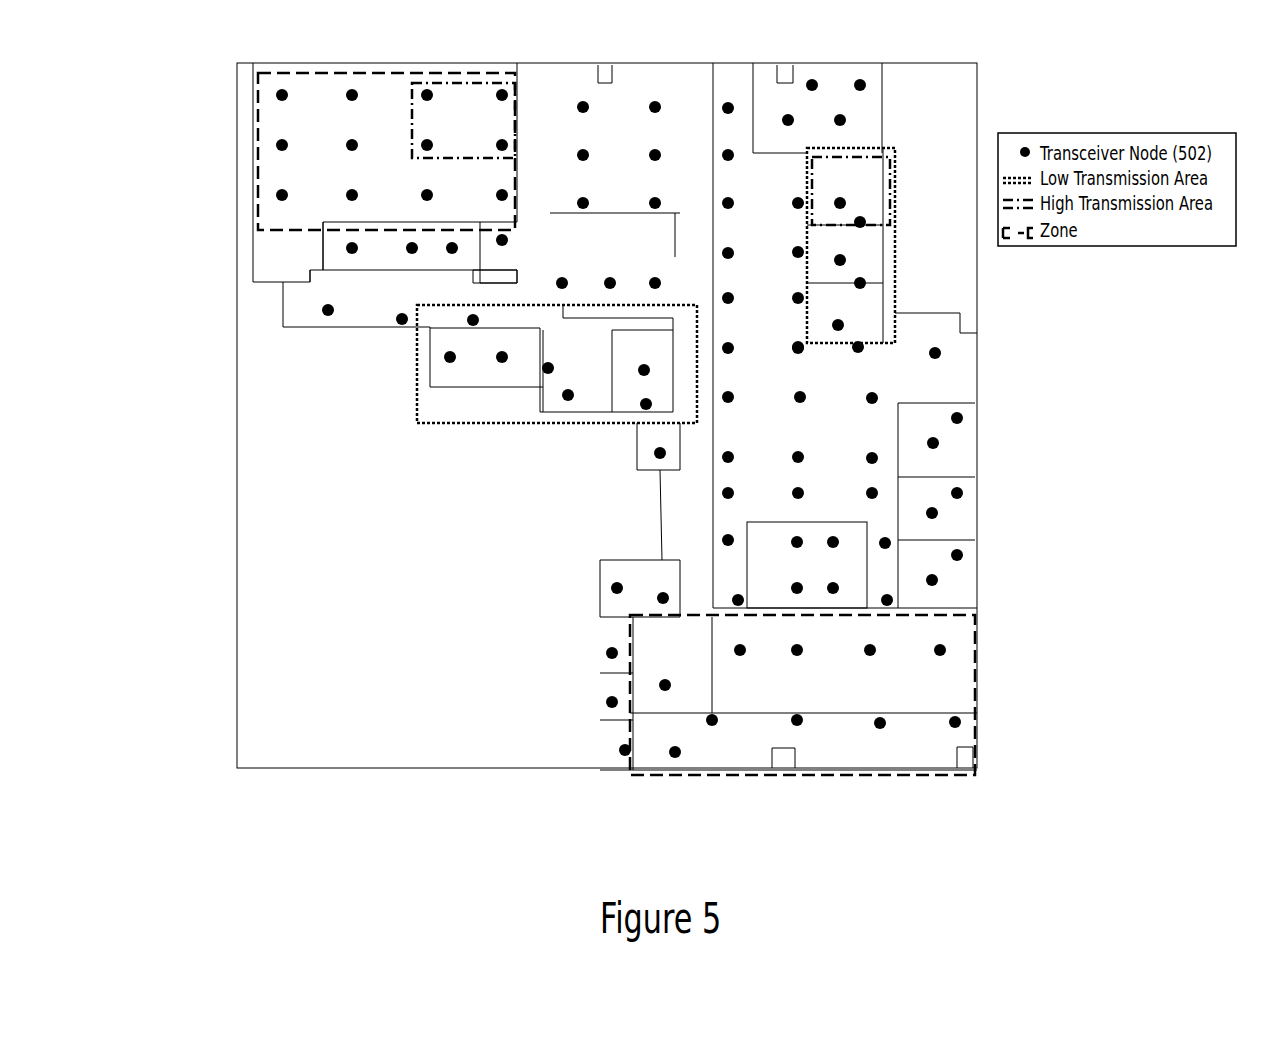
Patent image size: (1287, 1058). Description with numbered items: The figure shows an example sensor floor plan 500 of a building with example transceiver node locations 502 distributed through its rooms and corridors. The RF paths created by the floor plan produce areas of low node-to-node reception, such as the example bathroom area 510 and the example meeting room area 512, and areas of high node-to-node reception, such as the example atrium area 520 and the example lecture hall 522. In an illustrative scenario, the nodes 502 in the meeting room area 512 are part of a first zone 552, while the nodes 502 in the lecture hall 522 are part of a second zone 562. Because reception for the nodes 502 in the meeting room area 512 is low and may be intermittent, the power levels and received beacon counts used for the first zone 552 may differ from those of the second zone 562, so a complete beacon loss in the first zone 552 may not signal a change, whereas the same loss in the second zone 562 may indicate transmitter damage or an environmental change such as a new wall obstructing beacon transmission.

The sensor floor plan 500 is at (109, 77).
The transceiver node 502 is at (503, 91).
The bathroom area 510 is at (673, 305).
The meeting room area 512 is at (895, 254).
The atrium area 520 is at (955, 613).
The lecture hall 522 is at (328, 72).
The first zone 552 is at (828, 152).
The second zone 562 is at (437, 83).